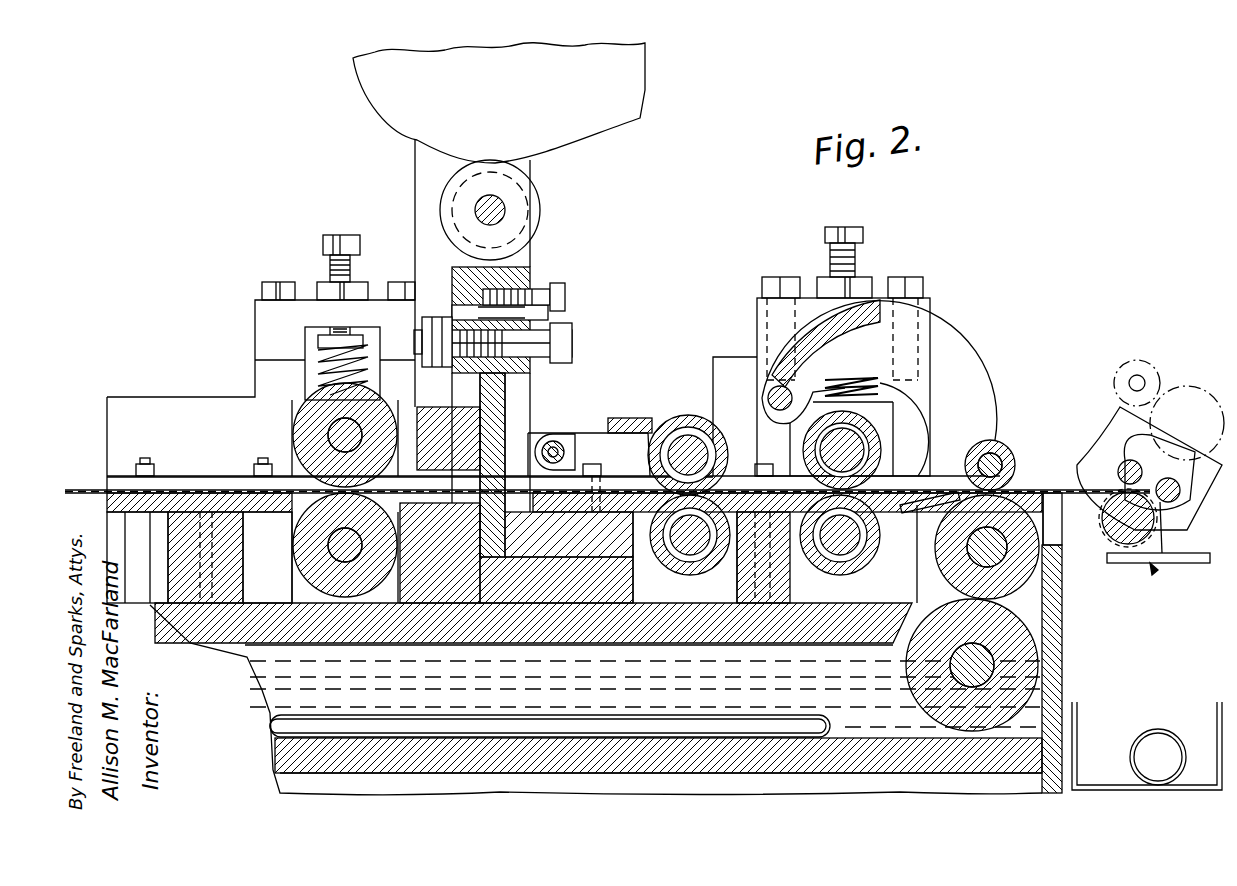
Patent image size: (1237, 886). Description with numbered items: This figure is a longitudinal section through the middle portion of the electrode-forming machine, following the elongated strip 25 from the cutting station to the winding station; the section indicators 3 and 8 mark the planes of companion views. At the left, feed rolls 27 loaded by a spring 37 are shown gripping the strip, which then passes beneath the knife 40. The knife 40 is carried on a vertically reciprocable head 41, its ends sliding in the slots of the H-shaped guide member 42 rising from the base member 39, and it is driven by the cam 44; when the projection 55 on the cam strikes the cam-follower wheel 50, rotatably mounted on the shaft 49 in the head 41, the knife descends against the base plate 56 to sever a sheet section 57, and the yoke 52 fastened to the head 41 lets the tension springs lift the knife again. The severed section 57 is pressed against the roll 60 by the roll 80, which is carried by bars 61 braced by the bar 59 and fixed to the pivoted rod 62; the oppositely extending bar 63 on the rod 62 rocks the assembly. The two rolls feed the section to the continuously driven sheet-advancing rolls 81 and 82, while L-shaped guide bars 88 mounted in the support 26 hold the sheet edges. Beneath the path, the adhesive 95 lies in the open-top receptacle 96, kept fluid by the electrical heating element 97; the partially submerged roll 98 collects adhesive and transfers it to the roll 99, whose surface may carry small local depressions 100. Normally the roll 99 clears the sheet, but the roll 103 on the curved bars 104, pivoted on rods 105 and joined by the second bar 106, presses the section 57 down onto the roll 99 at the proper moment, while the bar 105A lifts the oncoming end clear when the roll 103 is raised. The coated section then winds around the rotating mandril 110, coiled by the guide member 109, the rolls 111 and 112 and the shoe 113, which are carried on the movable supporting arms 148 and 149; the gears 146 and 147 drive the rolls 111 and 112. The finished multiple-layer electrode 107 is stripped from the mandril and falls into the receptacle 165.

The section line 3- 3 is at (619, 180).
The section line 8- 8 is at (845, 395).
The elongated strip 25 is at (95, 488).
The support 26 is at (160, 490).
The feed rollers 27 is at (320, 400).
The spring 37 is at (372, 345).
The base member 39 is at (526, 602).
The knife 40 is at (505, 412).
The vertically reciprocable head 41 is at (530, 282).
The H-shaped guide member 42 is at (456, 392).
The cam 44 is at (382, 108).
The shaft 49 is at (495, 207).
The cam-follower wheel 50 is at (540, 212).
The yoke 52 is at (568, 322).
The projection 55 is at (645, 118).
The base plate 56 is at (444, 652).
The sheet section 57 is at (575, 476).
The bracing bar 59 is at (655, 430).
The roll 60 is at (685, 572).
The bars 61 is at (616, 432).
The rod 62 is at (560, 449).
The bar 63 is at (553, 441).
The roll 80 is at (682, 426).
The sheet-advancing roll 81 is at (830, 572).
The sheet-advancing roll 82 is at (876, 456).
The L-shaped guide bars 88 is at (228, 476).
The adhesive 95 is at (520, 602).
The open-top receptacle 96 is at (428, 768).
The electrical heating element 97 is at (772, 740).
The roll 98 is at (1030, 680).
The roll 99 is at (1030, 578).
The small local depressions 100 is at (1044, 500).
The roll 103 is at (977, 452).
The curved bars 104 is at (950, 345).
The rods 105 is at (778, 409).
The bar 105A is at (915, 520).
The second bar 106 is at (832, 333).
The multiple-layer electrode 107 is at (1149, 746).
The guide member 109 is at (1162, 545).
The mandril 110 is at (1133, 546).
The roll 111 is at (1118, 465).
The roll 112 is at (1172, 505).
The shoe 113 is at (1107, 549).
The gear 146 is at (1137, 372).
The gear 147 is at (1183, 388).
The supporting arm 148 is at (1117, 412).
The supporting arm 149 is at (1163, 588).
The receptacle 165 is at (1216, 708).